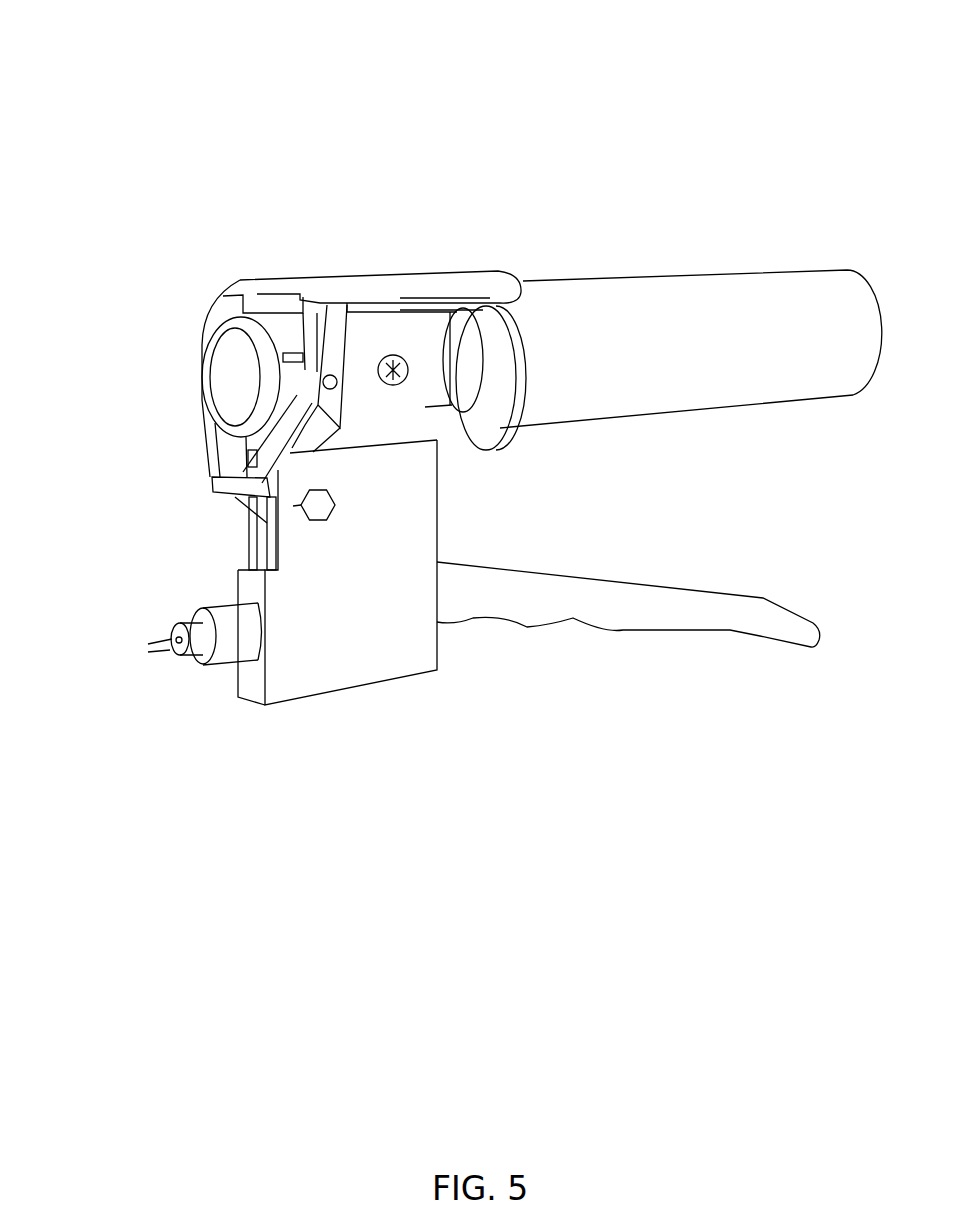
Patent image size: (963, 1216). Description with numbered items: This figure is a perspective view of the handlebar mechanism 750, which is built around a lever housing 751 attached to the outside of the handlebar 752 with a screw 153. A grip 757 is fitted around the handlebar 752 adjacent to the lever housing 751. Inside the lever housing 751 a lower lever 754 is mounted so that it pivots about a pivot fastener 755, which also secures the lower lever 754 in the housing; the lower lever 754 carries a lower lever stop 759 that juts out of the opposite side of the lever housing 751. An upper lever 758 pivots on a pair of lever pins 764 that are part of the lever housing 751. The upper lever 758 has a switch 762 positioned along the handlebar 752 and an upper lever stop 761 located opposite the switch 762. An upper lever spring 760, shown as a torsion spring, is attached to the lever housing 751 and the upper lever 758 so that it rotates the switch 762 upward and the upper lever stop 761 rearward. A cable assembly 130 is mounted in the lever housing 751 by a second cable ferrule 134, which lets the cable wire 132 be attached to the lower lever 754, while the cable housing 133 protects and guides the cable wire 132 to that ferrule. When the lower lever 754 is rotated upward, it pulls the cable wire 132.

The handlebar mechanism 750 is at (625, 130).
The grip 757 is at (693, 297).
The switch 762 is at (407, 284).
The upper lever spring 760 is at (287, 355).
The handlebar 752 is at (218, 333).
The upper lever stop 761 is at (212, 480).
The lower lever stop 759 is at (252, 502).
The lever pins 764 is at (337, 383).
The screw 153 is at (393, 385).
The upper lever 758 is at (290, 453).
The lever housing 751 is at (343, 667).
The pivot fastener 755 is at (322, 503).
The lower lever 754 is at (680, 612).
The cable assembly 130 is at (208, 745).
The second cable ferrule 134 is at (222, 653).
The cable housing 133 is at (190, 626).
The cable wire 132 is at (157, 648).